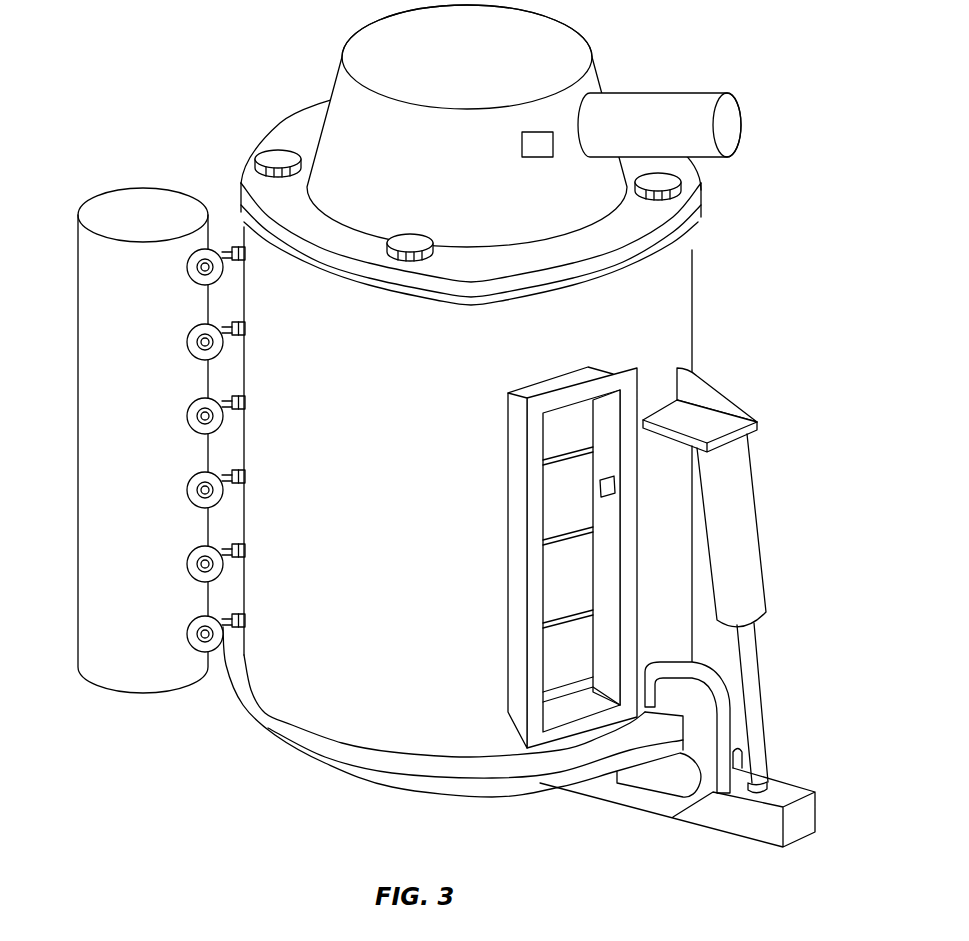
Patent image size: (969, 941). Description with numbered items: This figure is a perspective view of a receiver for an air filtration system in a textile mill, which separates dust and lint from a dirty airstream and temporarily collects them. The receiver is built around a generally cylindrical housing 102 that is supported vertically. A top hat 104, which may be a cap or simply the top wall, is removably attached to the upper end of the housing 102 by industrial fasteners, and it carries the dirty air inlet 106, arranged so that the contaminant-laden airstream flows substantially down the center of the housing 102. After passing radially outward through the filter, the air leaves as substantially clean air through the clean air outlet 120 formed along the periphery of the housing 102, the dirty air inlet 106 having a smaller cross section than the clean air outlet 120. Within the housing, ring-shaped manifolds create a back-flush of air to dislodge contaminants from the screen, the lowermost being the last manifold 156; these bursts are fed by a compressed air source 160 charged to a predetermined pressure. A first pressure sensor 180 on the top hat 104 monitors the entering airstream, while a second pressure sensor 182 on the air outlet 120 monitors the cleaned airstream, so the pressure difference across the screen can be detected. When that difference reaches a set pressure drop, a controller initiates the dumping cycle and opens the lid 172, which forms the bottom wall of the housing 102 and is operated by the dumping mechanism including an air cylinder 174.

The housing 102 is at (667, 295).
The top hat 104 is at (345, 107).
The dirty air inlet 106 is at (660, 110).
The first pressure sensor 180 is at (540, 132).
The compressed air source 160 is at (108, 207).
The clean air outlet 120 is at (600, 567).
The last manifold 156 is at (580, 684).
The second pressure sensor 182 is at (618, 488).
The air cylinder 174 is at (740, 567).
The lid 172 is at (380, 775).